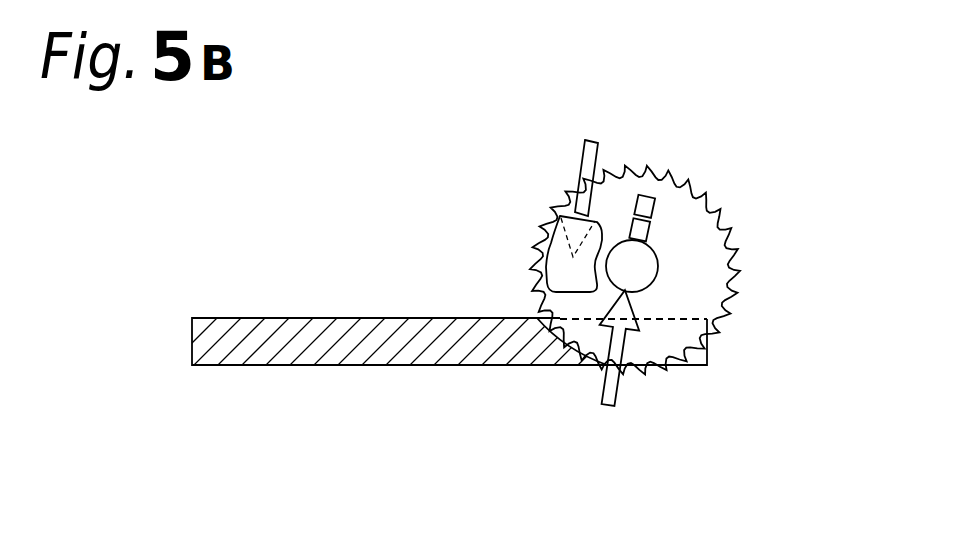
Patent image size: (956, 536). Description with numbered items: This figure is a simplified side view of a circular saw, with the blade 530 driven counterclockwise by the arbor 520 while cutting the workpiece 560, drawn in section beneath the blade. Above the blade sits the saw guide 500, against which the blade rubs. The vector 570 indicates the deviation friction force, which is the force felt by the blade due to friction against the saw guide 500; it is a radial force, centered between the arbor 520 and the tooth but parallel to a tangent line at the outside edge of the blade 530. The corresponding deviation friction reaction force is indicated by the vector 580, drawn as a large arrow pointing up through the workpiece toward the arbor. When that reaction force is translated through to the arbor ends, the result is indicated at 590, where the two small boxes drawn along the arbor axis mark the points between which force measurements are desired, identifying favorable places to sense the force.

The saw guide 500 is at (503, 252).
The arbor 520 is at (708, 219).
The blade 530 is at (682, 270).
The workpiece 560 is at (390, 304).
The deviation friction force vector 570 is at (585, 140).
The deviation friction reaction force vector 580 is at (598, 405).
The translated deviation friction reaction force 590 is at (729, 159).